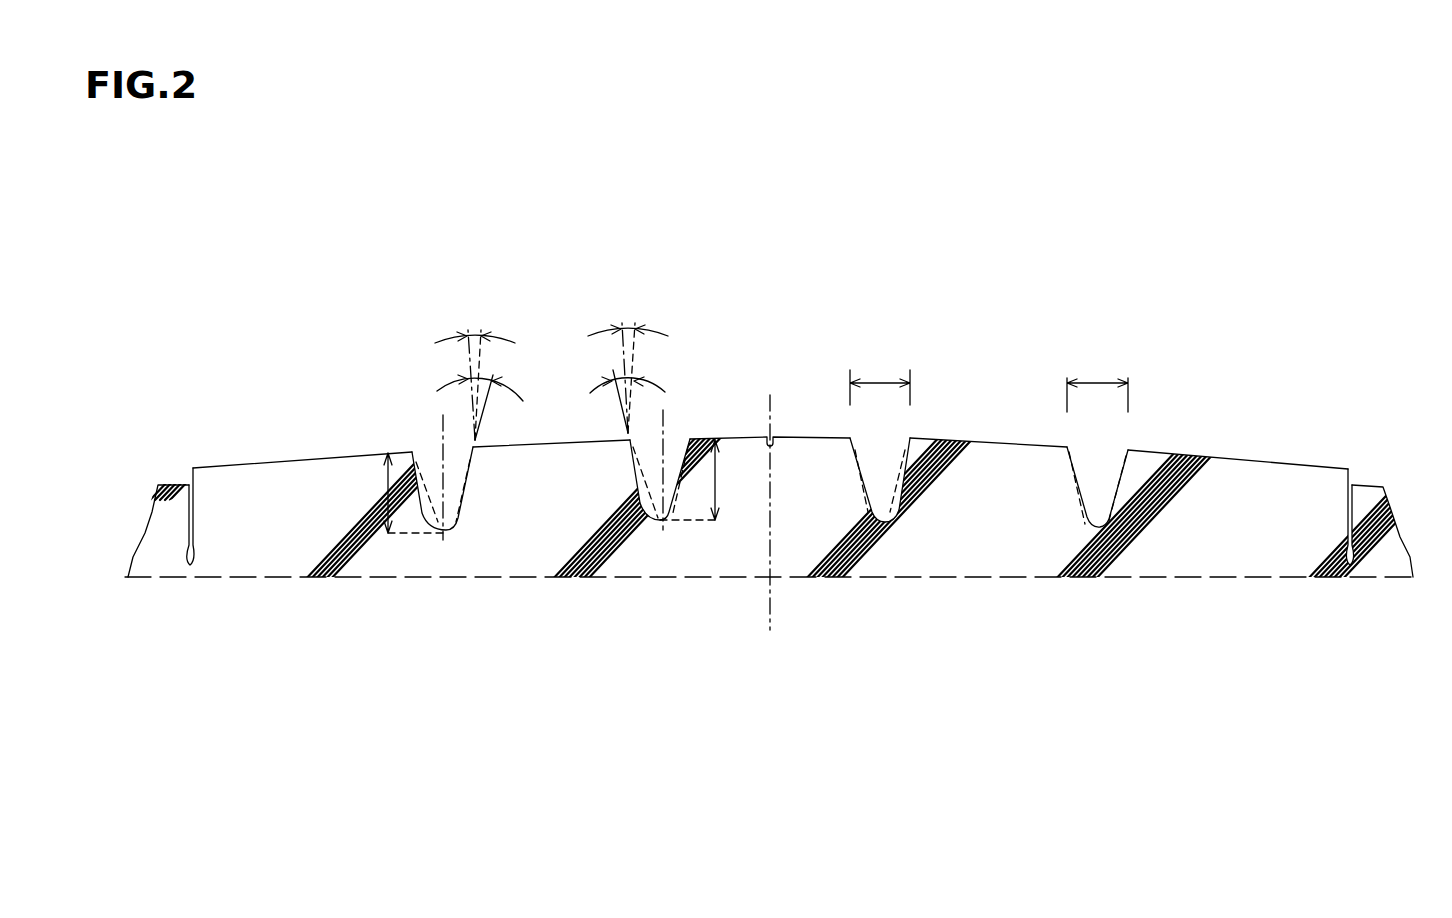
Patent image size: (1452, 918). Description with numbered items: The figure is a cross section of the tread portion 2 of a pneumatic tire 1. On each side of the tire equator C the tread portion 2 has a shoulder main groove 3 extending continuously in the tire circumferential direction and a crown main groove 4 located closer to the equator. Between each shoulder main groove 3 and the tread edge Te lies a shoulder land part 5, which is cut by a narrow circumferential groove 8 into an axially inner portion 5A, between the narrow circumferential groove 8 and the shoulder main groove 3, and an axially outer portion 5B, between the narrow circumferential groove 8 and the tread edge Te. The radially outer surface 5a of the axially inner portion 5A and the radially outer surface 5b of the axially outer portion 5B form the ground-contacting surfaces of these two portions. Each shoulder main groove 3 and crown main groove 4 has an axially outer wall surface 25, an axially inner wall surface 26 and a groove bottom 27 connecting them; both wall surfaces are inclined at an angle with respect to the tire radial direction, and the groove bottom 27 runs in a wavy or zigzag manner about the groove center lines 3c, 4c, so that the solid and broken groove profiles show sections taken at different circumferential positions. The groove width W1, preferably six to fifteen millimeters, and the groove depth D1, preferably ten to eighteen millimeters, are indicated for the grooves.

The pneumatic tire 1 is at (1145, 310).
The tread portion 2 is at (1020, 330).
The shoulder main groove 3 is at (1102, 467).
The crown main groove 4 is at (889, 461).
The shoulder land part 5 is at (276, 405).
The axially inner portion 5A is at (317, 450).
The axially outer portion 5B is at (176, 476).
The radially outer surface of the axially inner portion 5a is at (1233, 448).
The radially outer surface of the axially outer portion 5b is at (1368, 480).
The narrow circumferential groove 8 is at (193, 467).
The groove center line 3c is at (440, 437).
The groove center line 4c is at (665, 425).
The axially outer wall surface 25 is at (443, 527).
The axially inner wall surface 26 is at (468, 495).
The groove bottom 27 is at (462, 527).
The tire equator C is at (769, 486).
The groove depth D1 is at (386, 482).
The groove width W1 is at (989, 377).
The tread edge Te is at (158, 486).